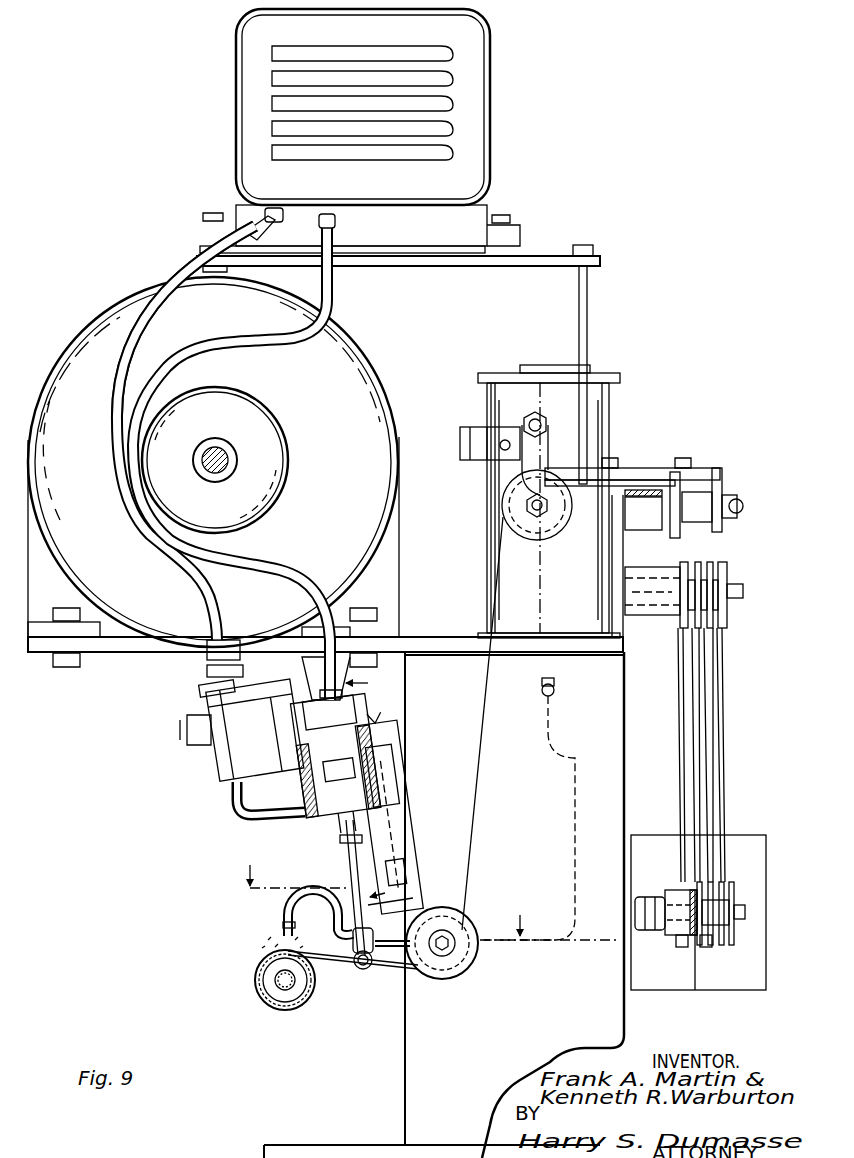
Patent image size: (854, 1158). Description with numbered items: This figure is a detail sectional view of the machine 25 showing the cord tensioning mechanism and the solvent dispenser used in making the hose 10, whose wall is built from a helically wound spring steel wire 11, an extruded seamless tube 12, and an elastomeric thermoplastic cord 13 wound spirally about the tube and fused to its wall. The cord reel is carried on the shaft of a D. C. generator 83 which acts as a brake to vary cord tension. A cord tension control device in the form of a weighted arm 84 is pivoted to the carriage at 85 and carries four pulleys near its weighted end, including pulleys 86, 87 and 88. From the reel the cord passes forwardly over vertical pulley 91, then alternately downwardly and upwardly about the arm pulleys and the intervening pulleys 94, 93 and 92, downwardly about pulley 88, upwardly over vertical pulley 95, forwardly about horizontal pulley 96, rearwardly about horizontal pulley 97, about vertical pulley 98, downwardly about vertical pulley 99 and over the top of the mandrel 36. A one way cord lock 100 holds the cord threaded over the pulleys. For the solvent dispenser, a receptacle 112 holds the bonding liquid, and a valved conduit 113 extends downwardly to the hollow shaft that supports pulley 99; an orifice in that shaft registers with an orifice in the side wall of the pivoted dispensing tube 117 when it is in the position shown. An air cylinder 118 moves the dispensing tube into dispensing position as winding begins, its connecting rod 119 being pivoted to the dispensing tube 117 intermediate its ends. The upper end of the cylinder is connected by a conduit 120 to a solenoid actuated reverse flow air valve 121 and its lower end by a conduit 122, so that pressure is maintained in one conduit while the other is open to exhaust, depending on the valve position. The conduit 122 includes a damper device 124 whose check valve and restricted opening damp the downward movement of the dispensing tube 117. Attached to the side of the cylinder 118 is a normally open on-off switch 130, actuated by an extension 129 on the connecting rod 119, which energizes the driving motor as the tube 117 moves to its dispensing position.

The solenoid actuated reverse flow air valve 121 is at (487, 160).
The D. C. generator 83 is at (120, 300).
The conduit 122 is at (187, 578).
The conduit 120 is at (283, 568).
The receptacle 112 is at (487, 578).
The one way cord lock 100 is at (468, 460).
The vertical pulley 98 is at (502, 508).
The horizontal pulley 97 is at (640, 468).
The horizontal pulley 96 is at (660, 468).
The vertical pulley 95 is at (725, 485).
The vertical pulley 91 is at (668, 513).
The pulley 94 is at (688, 567).
The pulley 93 is at (702, 562).
The pulley 92 is at (728, 568).
The pulley 88 is at (733, 935).
The weighted arm 84 is at (688, 905).
The pivot 85 is at (672, 938).
The pulley 86 is at (690, 948).
The pulley 87 is at (707, 948).
The damper device 124 is at (210, 757).
The air cylinder 118 is at (303, 701).
The helically wound spring steel wire 11 is at (371, 793).
The on-off switch 130 is at (404, 778).
The extension 129 is at (410, 860).
The connecting rod 119 is at (344, 845).
The dispensing tube 117 is at (282, 905).
The extruded seamless tube 12 is at (298, 1008).
The mandrel 36 is at (275, 996).
The elastomeric thermoplastic cord 13 is at (340, 968).
The vertical pulley 99 is at (456, 978).
The hose 10 is at (430, 892).
The valved conduit 113 is at (572, 760).
The machine 25 is at (402, 1068).